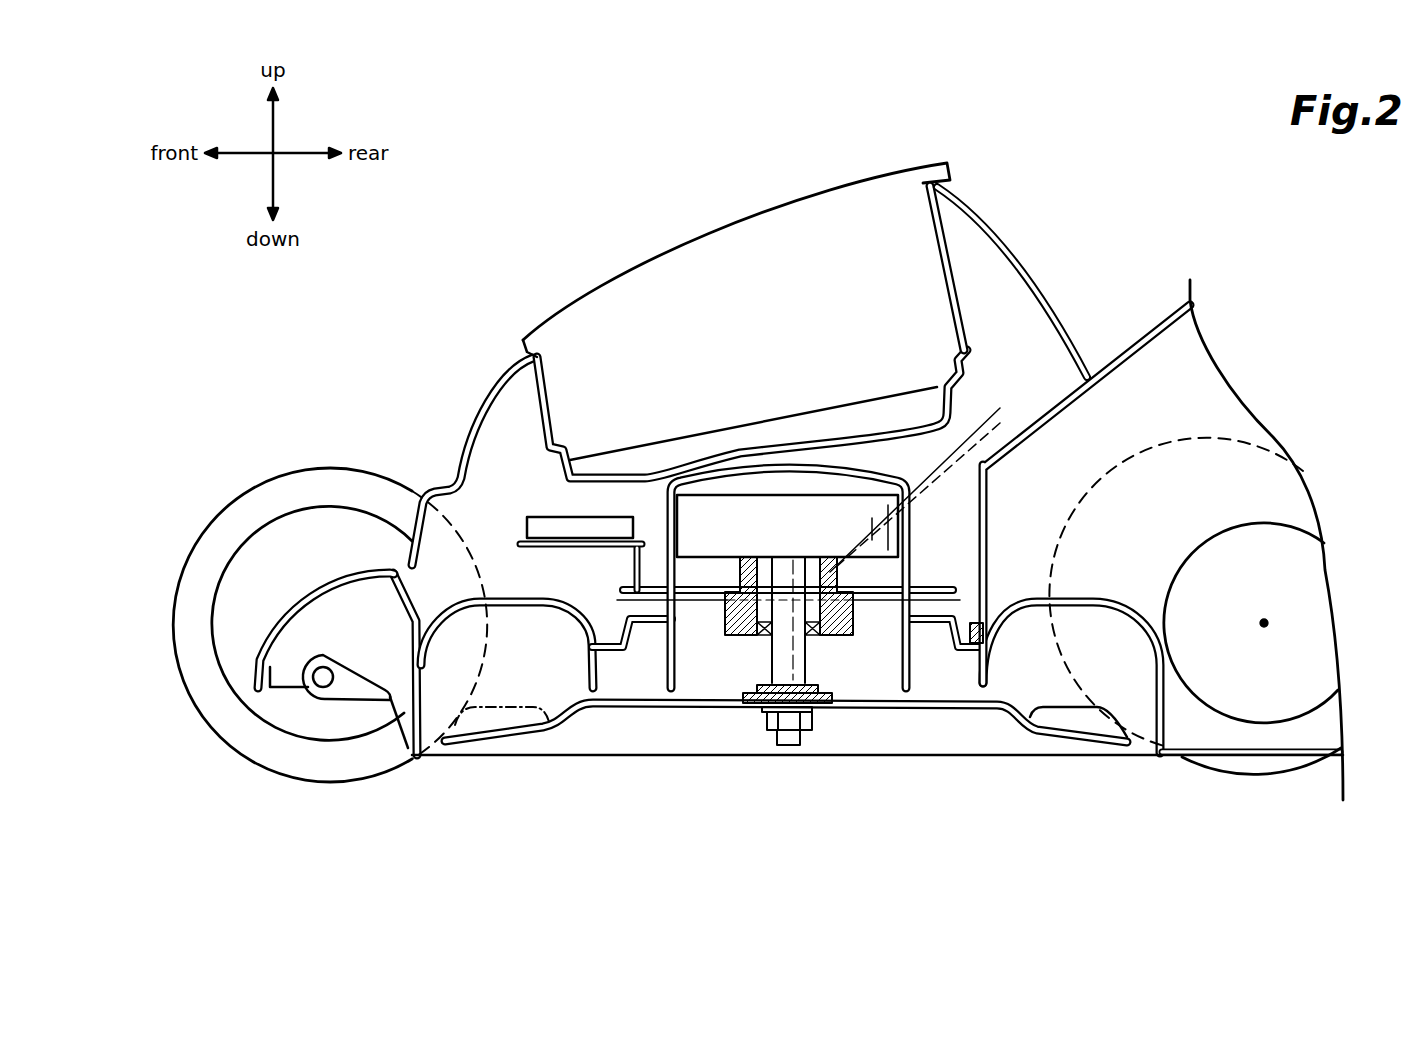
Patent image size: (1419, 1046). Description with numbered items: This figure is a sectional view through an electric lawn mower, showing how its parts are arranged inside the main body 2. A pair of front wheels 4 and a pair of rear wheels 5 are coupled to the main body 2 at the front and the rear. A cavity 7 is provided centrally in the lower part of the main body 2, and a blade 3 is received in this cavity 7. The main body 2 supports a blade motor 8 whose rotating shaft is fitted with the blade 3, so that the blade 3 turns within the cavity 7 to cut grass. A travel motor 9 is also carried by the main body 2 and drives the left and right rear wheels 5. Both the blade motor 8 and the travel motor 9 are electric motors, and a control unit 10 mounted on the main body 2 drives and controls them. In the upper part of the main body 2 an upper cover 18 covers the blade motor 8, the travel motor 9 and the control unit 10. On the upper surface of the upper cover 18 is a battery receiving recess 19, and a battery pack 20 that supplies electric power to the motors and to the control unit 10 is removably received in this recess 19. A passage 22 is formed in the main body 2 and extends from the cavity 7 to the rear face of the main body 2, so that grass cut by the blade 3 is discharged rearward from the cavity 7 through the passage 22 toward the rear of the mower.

The main body 2 is at (333, 587).
The blade 3 is at (653, 707).
The front wheels 4 is at (268, 752).
The rear wheels 5 is at (1255, 767).
The cavity 7 is at (512, 604).
The blade motor 8 is at (840, 503).
The travel motor 9 is at (1297, 527).
The control unit 10 is at (545, 518).
The upper cover 18 is at (1017, 263).
The battery receiving recess 19 is at (947, 237).
The battery pack 20 is at (603, 293).
The passage 22 is at (958, 512).